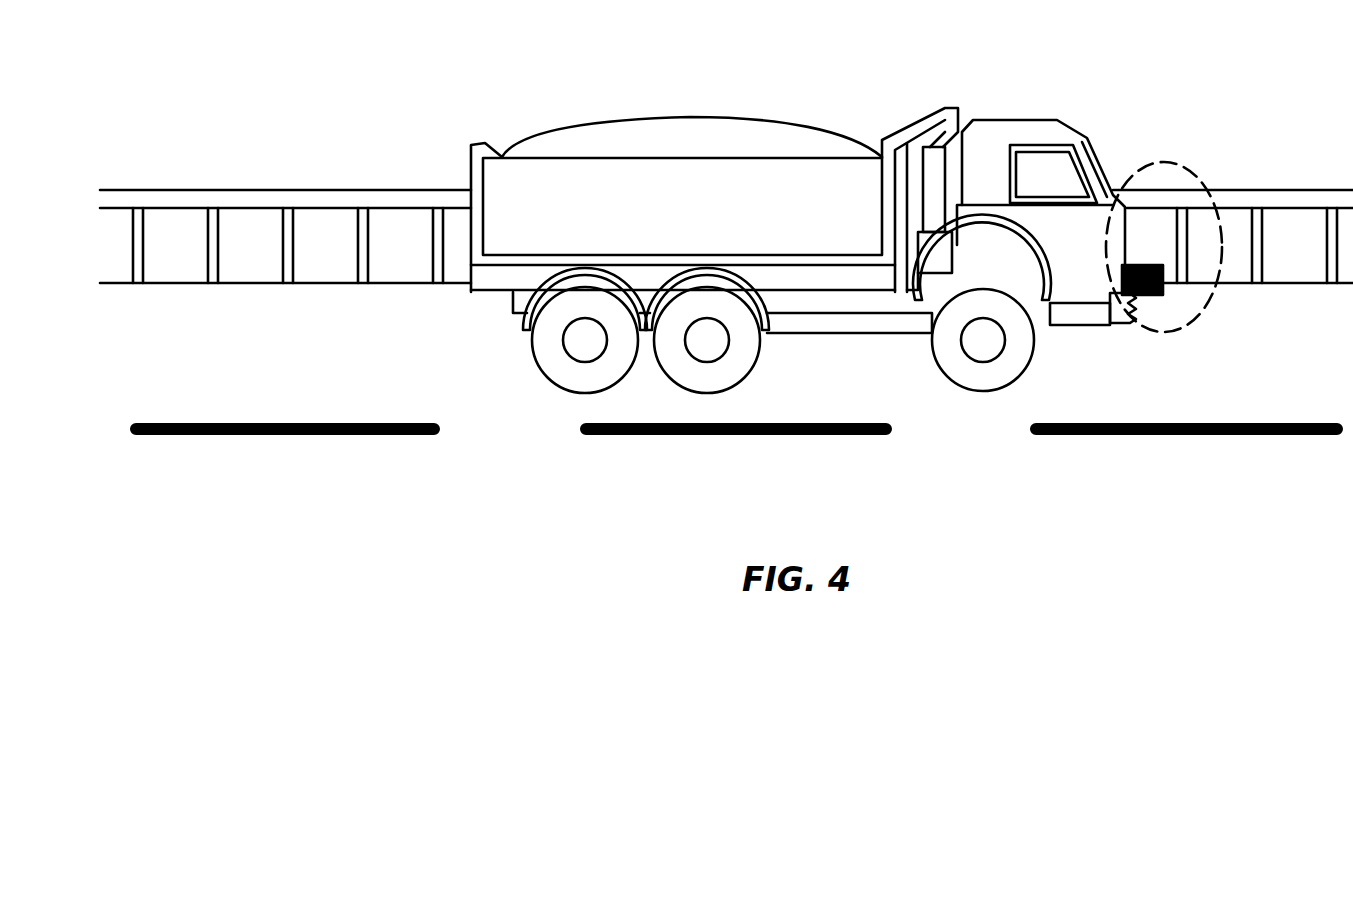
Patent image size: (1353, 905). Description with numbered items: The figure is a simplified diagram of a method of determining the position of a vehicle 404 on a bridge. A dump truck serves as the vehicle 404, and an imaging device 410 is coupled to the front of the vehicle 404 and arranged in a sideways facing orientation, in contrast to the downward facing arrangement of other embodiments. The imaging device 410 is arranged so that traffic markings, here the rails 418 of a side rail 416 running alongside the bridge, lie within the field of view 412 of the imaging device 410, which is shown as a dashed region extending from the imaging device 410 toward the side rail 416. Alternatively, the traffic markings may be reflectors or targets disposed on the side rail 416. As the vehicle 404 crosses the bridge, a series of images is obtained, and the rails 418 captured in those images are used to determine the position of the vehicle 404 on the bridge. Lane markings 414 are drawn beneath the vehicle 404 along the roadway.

The vehicle 404 is at (1052, 120).
The imaging device 410 is at (1122, 268).
The field of view 412 is at (1187, 173).
The lane marking 414 is at (880, 435).
The side rail 416 is at (258, 188).
The rails 418 is at (357, 263).